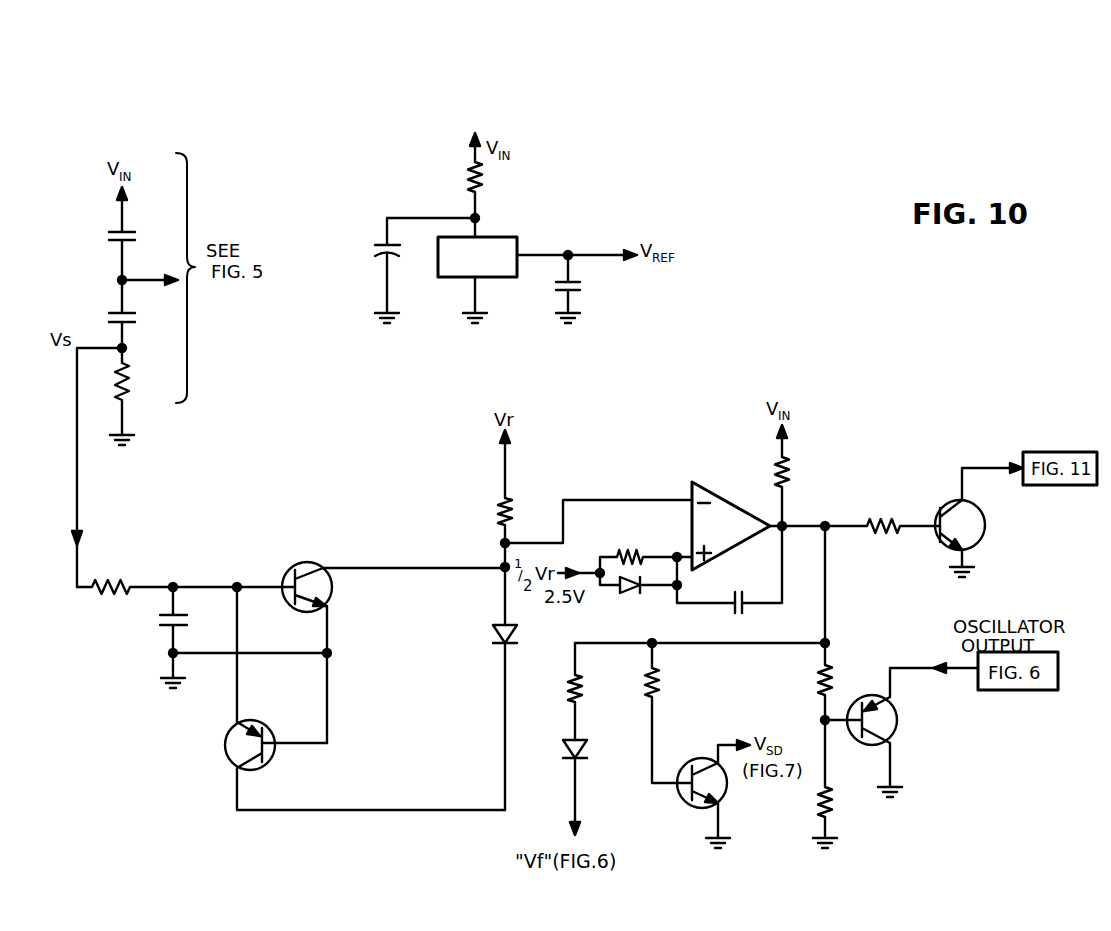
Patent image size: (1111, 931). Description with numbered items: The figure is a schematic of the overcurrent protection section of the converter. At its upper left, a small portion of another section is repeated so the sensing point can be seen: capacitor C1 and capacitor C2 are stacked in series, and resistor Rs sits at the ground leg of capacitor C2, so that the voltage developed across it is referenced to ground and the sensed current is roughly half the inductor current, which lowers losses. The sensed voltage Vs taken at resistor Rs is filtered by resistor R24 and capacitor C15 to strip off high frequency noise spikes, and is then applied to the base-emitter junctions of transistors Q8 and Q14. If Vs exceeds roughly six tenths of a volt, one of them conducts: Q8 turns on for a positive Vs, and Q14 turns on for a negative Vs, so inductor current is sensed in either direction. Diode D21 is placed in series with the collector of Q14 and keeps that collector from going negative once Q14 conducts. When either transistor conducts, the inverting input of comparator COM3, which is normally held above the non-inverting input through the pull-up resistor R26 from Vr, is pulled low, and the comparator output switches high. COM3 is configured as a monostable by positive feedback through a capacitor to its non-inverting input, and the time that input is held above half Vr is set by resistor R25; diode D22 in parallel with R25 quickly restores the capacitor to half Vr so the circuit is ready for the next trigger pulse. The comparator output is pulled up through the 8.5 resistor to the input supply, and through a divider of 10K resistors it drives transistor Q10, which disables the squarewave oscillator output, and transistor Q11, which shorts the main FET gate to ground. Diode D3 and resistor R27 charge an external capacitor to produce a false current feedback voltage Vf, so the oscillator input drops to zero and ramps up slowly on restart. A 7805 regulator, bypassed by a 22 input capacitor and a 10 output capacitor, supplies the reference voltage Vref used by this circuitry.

The capacitor C1 is at (135, 233).
The capacitor C2 is at (130, 314).
The resistor Rs is at (128, 396).
The 7805 voltage regulator 7805 is at (537, 228).
The 22 uF input capacitor 22 is at (415, 270).
The 10 uF output capacitor 10 is at (585, 289).
The resistor R24 is at (186, 588).
The capacitor C15 is at (188, 637).
The transistor Q8 is at (325, 587).
The transistor Q14 is at (347, 765).
The resistor R26 68K R26 is at (484, 498).
The diode D21 is at (491, 688).
The resistor R25 is at (646, 545).
The diode D22 is at (667, 588).
The comparator COM3 is at (758, 547).
The 8.5K pull-up resistor 8.5 is at (800, 475).
The resistor R27 is at (569, 691).
The diode D3 is at (591, 783).
The 10K resistors 10K is at (756, 745).
The transistor Q11 is at (722, 794).
The transistor Q10 is at (901, 730).